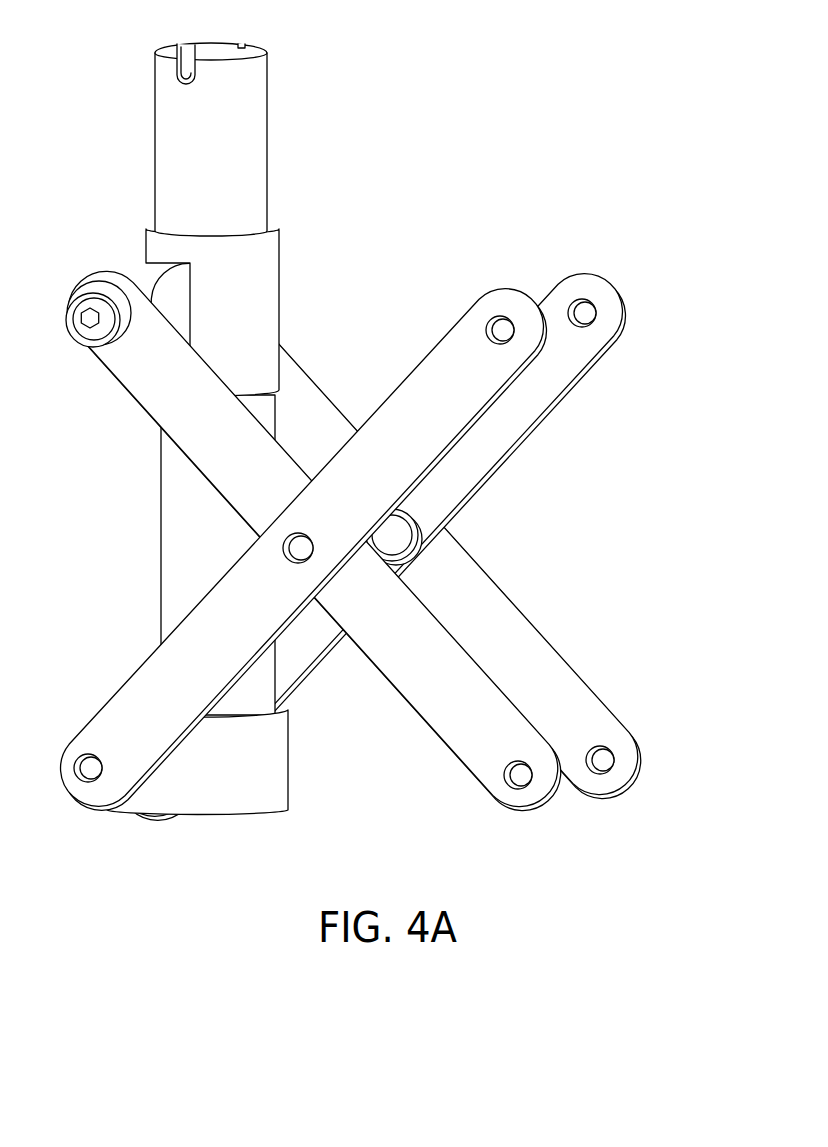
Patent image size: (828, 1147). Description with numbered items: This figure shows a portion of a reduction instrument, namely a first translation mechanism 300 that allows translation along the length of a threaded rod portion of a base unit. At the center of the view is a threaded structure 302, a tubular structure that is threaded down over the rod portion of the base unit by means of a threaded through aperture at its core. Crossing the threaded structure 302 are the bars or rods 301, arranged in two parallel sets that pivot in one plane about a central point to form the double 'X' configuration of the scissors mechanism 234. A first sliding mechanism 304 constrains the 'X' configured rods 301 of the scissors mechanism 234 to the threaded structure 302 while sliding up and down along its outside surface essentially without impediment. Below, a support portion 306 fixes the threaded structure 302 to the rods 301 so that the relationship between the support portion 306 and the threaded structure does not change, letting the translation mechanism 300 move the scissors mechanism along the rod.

The first translation mechanism 300 is at (383, 431).
The scissors mechanism 234 is at (378, 431).
The bars or rods 301 is at (566, 400).
The threaded structure 302 is at (124, 128).
The first sliding mechanism 304 is at (304, 285).
The support portion 306 is at (300, 770).